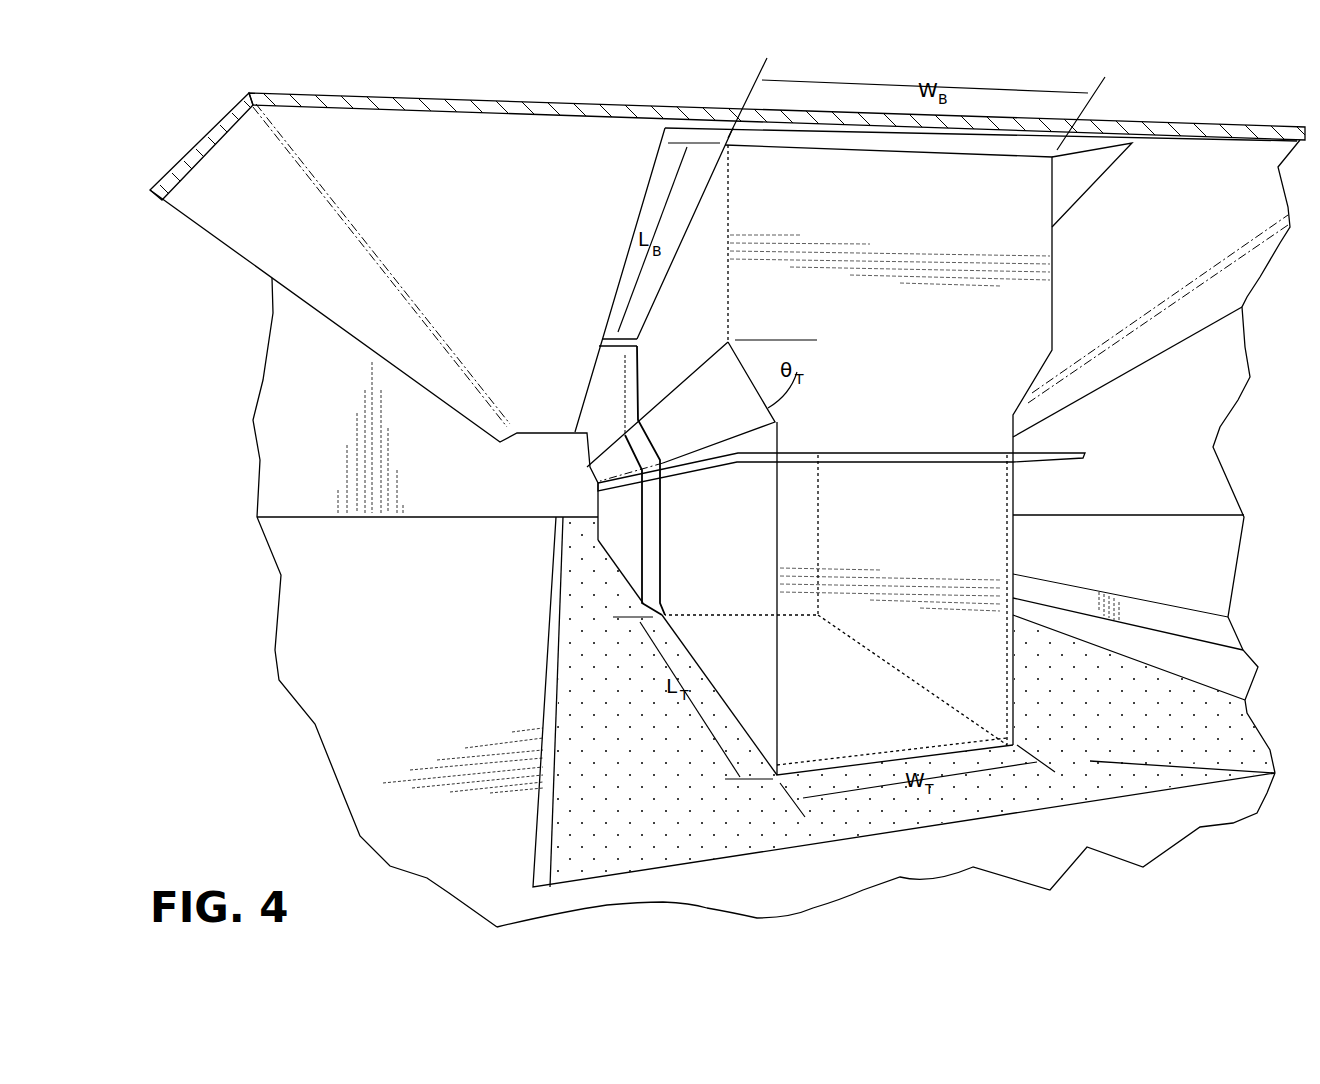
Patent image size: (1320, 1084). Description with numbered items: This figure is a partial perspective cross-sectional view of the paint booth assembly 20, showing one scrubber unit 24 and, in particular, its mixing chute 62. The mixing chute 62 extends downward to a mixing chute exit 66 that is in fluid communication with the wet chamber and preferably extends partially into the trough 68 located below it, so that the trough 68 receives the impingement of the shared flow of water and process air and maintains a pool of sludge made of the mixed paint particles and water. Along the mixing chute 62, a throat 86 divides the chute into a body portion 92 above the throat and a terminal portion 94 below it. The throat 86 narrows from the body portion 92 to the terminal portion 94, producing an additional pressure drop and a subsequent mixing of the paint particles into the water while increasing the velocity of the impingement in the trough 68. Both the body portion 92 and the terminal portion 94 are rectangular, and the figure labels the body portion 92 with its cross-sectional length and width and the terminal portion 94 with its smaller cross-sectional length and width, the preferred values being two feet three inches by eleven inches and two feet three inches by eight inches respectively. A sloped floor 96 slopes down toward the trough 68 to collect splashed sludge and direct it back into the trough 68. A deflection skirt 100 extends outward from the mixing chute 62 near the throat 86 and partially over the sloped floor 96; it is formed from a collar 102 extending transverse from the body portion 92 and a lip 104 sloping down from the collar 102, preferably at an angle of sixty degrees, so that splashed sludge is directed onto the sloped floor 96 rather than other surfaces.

The paint booth assembly 20 is at (1197, 103).
The scrubber unit 24 is at (595, 503).
The mixing chute 62 is at (1052, 298).
The mixing chute exit 66 is at (1013, 745).
The trough 68 is at (641, 809).
The throat 86 is at (1042, 368).
The body portion 92 is at (670, 362).
The terminal portion 94 is at (698, 542).
The sloped floor 96 is at (751, 577).
The deflection skirt 100 is at (282, 92).
The collar 102 is at (415, 102).
The lip 104 is at (203, 137).